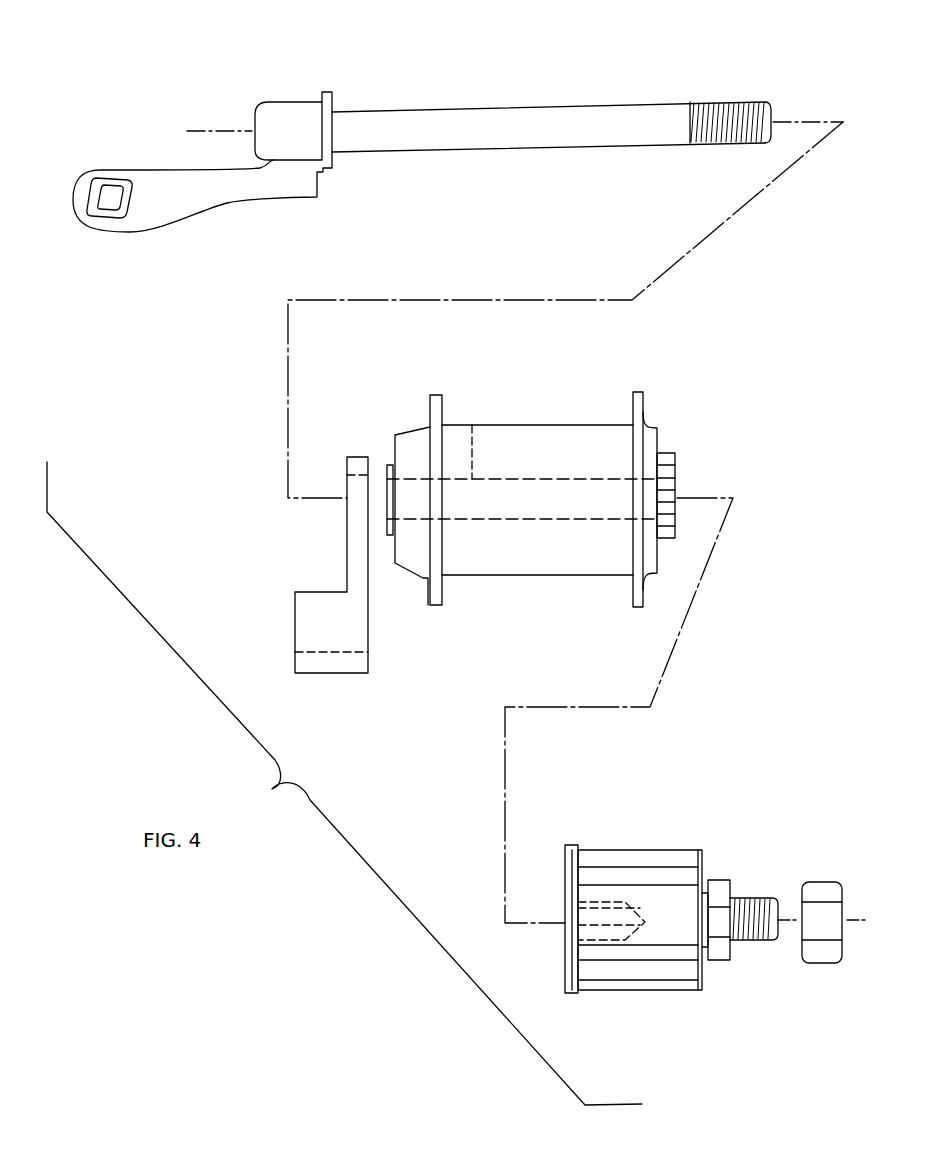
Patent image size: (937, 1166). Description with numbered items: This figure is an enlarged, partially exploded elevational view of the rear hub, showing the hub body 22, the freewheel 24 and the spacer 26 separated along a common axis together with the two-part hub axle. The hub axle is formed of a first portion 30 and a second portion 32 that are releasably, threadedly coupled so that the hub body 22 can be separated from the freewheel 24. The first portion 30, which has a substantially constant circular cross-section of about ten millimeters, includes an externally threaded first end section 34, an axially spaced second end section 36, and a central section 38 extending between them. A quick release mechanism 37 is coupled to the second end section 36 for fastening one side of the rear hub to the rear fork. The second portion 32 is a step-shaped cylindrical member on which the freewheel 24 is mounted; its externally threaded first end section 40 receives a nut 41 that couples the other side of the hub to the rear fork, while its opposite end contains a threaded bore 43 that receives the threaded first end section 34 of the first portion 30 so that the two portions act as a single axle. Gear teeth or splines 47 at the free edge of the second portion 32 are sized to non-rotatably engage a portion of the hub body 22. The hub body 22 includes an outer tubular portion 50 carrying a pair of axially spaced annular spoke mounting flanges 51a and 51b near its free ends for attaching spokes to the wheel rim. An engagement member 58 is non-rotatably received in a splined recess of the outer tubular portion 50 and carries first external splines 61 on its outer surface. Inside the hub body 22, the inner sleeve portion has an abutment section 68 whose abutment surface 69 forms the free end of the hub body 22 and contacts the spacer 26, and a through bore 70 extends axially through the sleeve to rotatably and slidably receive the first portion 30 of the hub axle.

The hub body 22 is at (554, 495).
The freewheel 24 is at (642, 891).
The spacer 26 is at (336, 692).
The first portion 30 is at (481, 100).
The second portion 32 is at (748, 880).
The first end section 34 is at (730, 102).
The second end section 36 is at (334, 165).
The quick release mechanism 37 is at (262, 95).
The central section 38 is at (522, 152).
The first end section 40 is at (760, 942).
The nut 41 is at (810, 878).
The threaded bore 43 is at (566, 930).
The splines 47 is at (556, 893).
The outer tubular portion 50 is at (526, 577).
The spoke mounting flange 51a is at (451, 403).
The spoke mounting flange 51b is at (648, 398).
The engagement member 58 is at (706, 462).
The first external splines 61 is at (672, 492).
The abutment section 68 is at (385, 540).
The abutment surface 69 is at (387, 487).
The through bore 70 is at (472, 425).